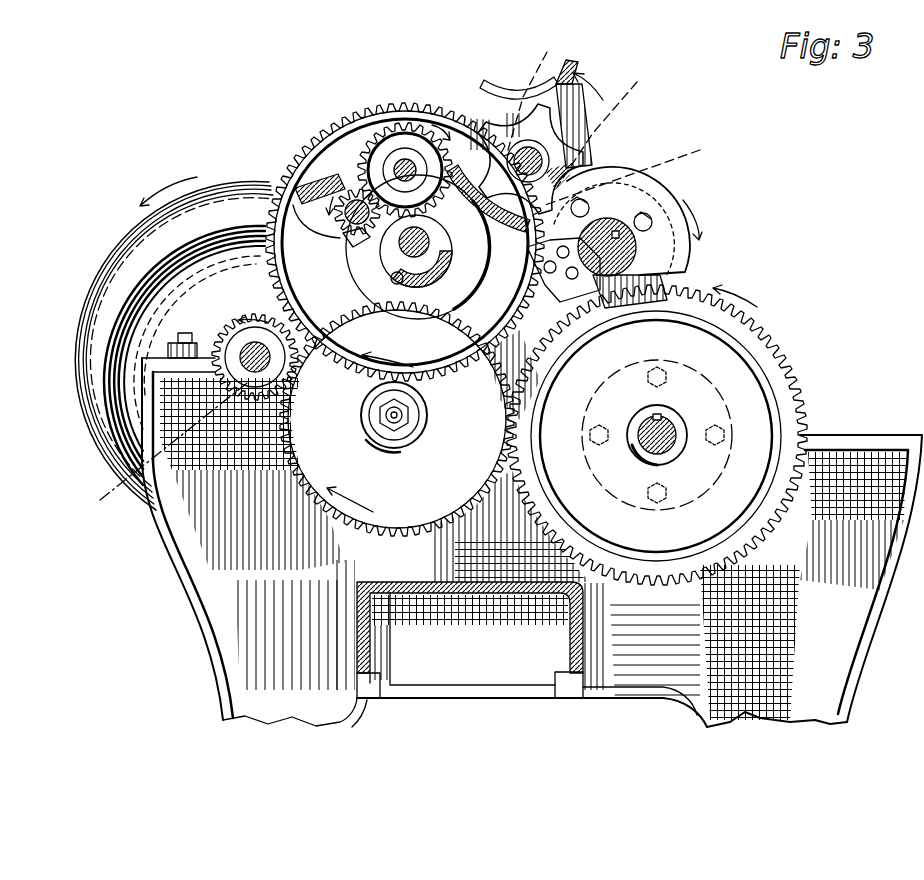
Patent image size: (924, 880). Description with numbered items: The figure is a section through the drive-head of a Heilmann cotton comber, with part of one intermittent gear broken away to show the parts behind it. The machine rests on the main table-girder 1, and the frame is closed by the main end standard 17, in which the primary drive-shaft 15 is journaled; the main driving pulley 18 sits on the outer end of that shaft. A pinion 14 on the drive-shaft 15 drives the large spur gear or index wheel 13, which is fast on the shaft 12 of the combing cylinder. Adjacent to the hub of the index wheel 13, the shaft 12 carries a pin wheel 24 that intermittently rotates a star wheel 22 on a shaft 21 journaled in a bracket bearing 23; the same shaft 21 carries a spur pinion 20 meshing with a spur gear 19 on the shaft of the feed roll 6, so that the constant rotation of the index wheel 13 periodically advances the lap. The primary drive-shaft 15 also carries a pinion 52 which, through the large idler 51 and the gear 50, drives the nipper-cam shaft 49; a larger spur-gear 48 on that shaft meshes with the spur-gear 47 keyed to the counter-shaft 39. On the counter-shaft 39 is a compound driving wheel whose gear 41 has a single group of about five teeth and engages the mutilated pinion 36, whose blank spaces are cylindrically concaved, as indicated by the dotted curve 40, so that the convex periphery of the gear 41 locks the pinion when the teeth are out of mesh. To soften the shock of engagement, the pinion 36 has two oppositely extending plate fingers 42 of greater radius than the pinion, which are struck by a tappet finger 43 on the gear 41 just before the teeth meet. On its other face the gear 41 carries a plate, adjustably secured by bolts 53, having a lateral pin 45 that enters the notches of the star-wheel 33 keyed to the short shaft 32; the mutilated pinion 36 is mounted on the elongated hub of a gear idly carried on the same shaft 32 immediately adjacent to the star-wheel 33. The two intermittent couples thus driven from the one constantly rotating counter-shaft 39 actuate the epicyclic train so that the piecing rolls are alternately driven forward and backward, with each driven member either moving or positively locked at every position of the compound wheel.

The main table-girder 1 is at (380, 647).
The feed roll 6 is at (406, 166).
The shaft of the combing cylinder 12 is at (432, 243).
The index wheel 13 is at (310, 155).
The pinion 14 is at (227, 332).
The primary drive-shaft 15 is at (237, 360).
The main end standard 17 is at (532, 528).
The main driving pulley 18 is at (118, 248).
The spur gear 19 is at (377, 137).
The spur pinion 20 is at (345, 226).
The shaft 21 is at (352, 200).
The star wheel 22 is at (350, 242).
The bracket bearing 23 is at (297, 190).
The pin wheel 24 is at (393, 250).
The short shaft 32 is at (585, 95).
The star-wheel 33 is at (565, 88).
The mutilated pinion 36 is at (600, 170).
The counter-shaft 39 is at (687, 252).
The cylindrically concaved blank spaces 40 is at (585, 110).
The driving gear 41 is at (636, 252).
The plate fingers 42 is at (487, 98).
The tappet finger 43 is at (557, 280).
The pin 45 is at (634, 205).
The spur-gear 47 is at (660, 283).
The larger spur-gear 48 is at (657, 446).
The nipper-cam shaft 49 is at (670, 420).
The gear 50 is at (798, 392).
The large idler 51 is at (397, 419).
The pinion 52 is at (162, 452).
The bolts 53 is at (650, 215).